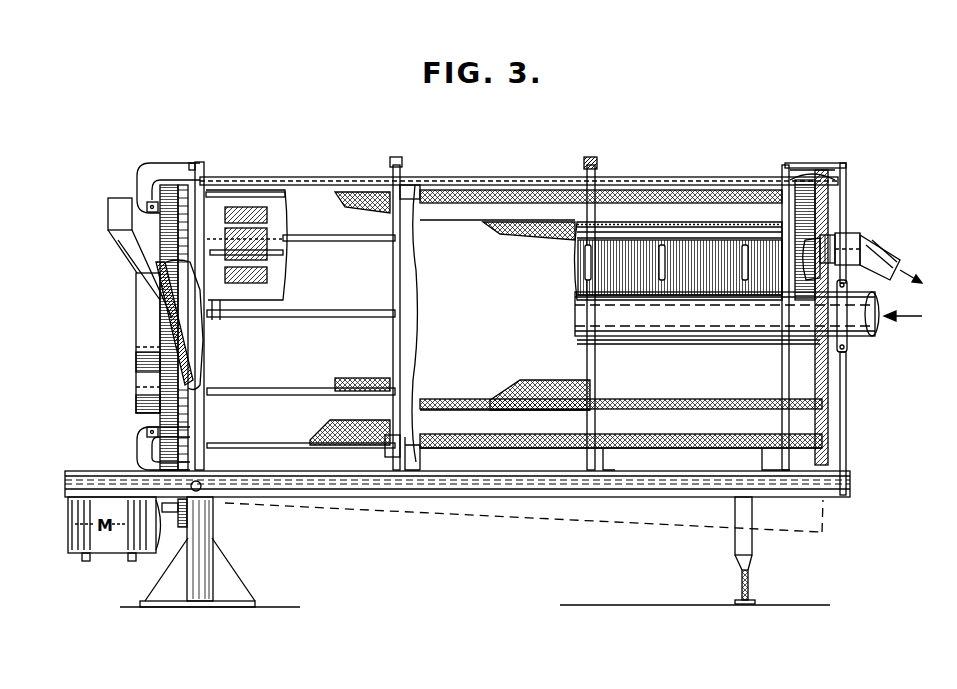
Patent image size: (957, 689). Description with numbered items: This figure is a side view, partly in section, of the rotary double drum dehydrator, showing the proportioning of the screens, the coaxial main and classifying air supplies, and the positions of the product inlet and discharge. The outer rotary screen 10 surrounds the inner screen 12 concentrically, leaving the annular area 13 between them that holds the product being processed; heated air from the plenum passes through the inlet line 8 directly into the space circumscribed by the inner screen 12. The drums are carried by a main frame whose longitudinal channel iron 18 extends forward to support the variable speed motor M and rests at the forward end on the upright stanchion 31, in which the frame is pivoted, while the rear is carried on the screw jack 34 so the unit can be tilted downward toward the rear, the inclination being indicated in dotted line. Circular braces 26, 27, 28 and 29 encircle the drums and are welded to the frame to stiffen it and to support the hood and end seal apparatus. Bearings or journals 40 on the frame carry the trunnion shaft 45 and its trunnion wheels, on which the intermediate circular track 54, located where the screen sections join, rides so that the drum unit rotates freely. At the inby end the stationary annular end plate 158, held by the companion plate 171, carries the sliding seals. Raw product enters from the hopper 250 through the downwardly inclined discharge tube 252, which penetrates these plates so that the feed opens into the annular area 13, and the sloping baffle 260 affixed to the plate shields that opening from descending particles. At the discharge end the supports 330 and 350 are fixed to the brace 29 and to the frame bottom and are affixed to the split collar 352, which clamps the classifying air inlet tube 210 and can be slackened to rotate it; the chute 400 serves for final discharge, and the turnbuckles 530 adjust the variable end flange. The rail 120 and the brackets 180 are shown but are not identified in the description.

The inlet line 8 is at (136, 336).
The outer rotary screen 10 is at (690, 448).
The inner screen 12 is at (688, 398).
The annular area 13 is at (525, 425).
The channel iron 18 is at (655, 492).
The circular brace 26 is at (199, 166).
The circular brace 27 is at (397, 304).
The circular brace 28 is at (592, 162).
The circular brace 29 is at (787, 164).
The upright stanchion 31 is at (208, 527).
The screw jack 34 is at (752, 513).
The bearings or journals 40 is at (422, 460).
The trunnion shaft 45 is at (334, 446).
The intermediate circular track 54 is at (405, 185).
The top rail 120 is at (470, 178).
The annular end plate 158 is at (160, 392).
The companion plate 171 is at (136, 376).
The bracket 180 is at (164, 172).
The inlet tube 210 is at (650, 342).
The hopper 250 is at (112, 217).
The downwardly inclined discharge tube 252 is at (145, 282).
The sloping baffle 260 is at (190, 366).
The support 330 is at (846, 200).
The support 350 is at (846, 440).
The collar 352 is at (850, 295).
The chute 400 is at (860, 233).
The turnbuckles 530 is at (745, 258).